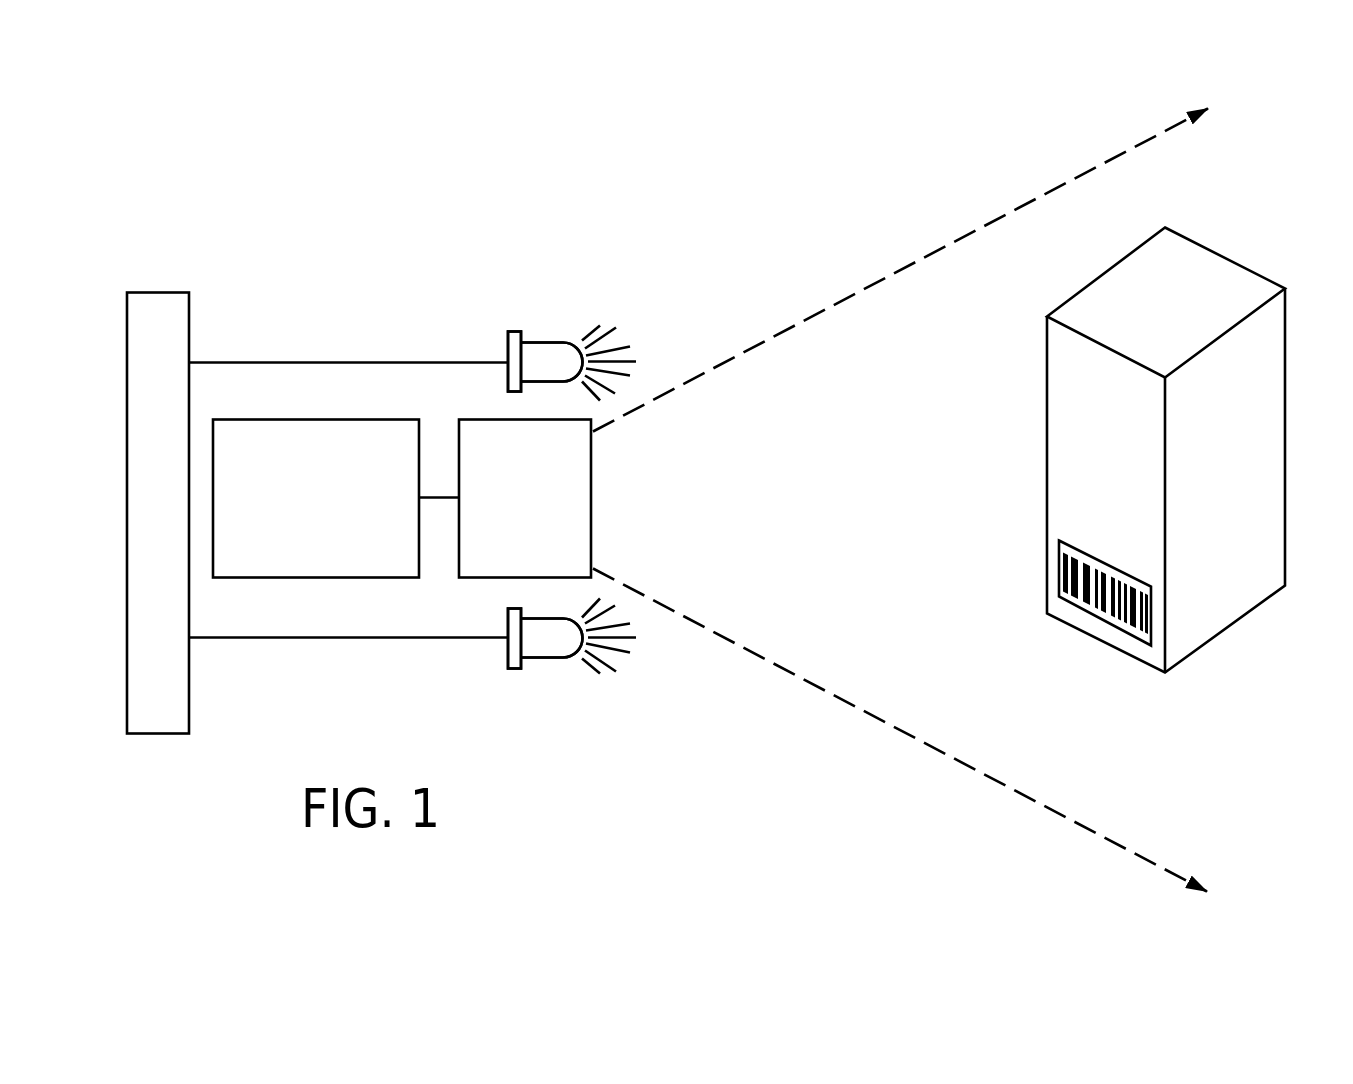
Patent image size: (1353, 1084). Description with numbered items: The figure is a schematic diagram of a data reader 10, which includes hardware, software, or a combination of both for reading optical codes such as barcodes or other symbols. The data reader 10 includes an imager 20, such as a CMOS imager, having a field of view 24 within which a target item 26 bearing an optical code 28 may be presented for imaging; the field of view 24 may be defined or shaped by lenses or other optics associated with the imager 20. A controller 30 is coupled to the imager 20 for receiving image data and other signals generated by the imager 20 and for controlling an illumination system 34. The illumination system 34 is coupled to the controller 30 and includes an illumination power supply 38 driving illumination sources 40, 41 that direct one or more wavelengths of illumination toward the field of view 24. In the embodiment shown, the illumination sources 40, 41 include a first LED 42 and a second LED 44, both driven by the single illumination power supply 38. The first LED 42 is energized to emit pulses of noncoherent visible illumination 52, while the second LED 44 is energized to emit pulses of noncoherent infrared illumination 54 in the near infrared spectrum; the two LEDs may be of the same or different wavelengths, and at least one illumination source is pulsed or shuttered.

The data reader 10 is at (474, 195).
The imager 20 is at (488, 565).
The field of view 24 is at (860, 705).
The target item 26 is at (1068, 416).
The optical code 28 is at (1060, 567).
The controller 30 is at (310, 565).
The illumination system 34 is at (282, 280).
The illumination power supply 38 is at (186, 688).
The first illumination source 40 is at (555, 302).
The second illumination source 41 is at (558, 682).
The first LED 42 is at (540, 345).
The second LED 44 is at (538, 645).
The visible illumination 52 is at (620, 313).
The infrared illumination 54 is at (618, 660).